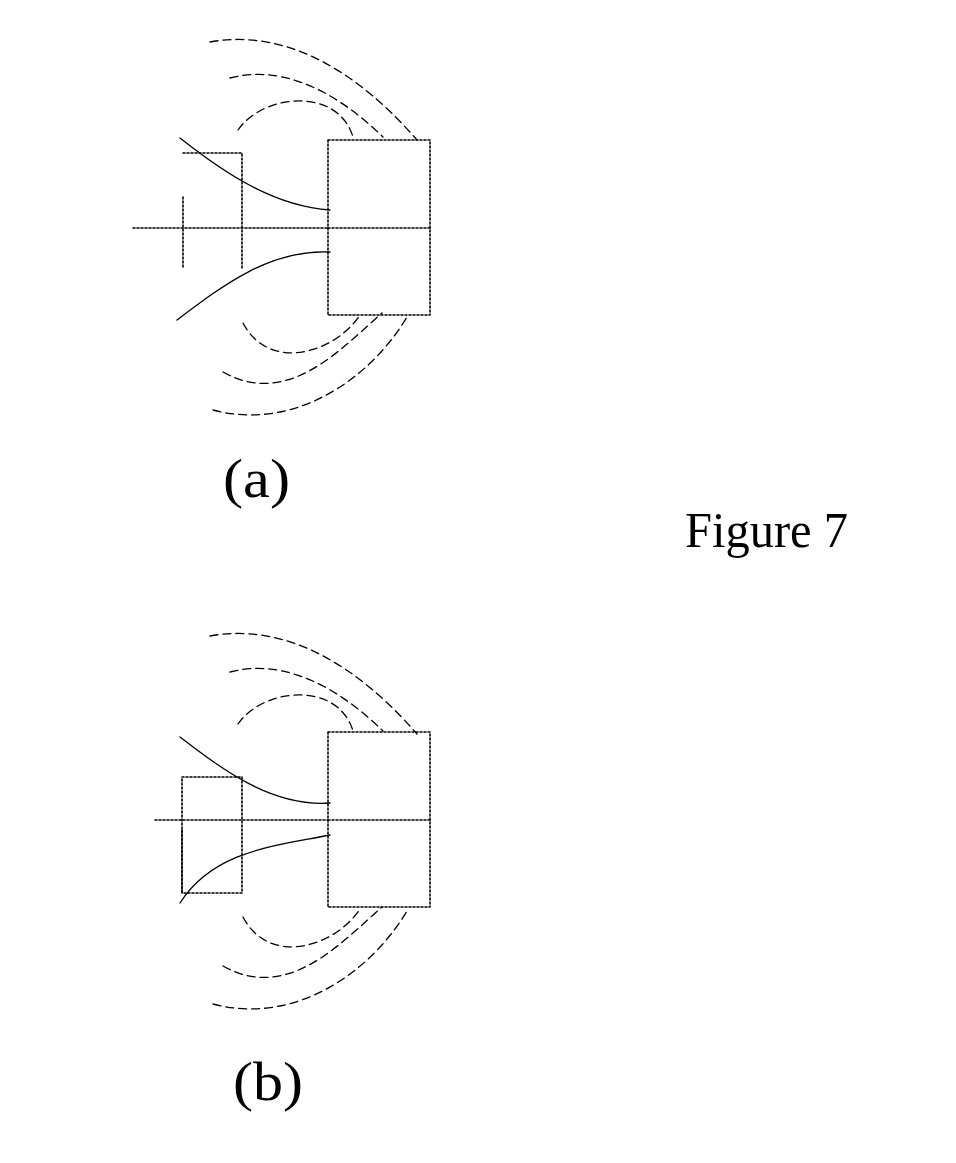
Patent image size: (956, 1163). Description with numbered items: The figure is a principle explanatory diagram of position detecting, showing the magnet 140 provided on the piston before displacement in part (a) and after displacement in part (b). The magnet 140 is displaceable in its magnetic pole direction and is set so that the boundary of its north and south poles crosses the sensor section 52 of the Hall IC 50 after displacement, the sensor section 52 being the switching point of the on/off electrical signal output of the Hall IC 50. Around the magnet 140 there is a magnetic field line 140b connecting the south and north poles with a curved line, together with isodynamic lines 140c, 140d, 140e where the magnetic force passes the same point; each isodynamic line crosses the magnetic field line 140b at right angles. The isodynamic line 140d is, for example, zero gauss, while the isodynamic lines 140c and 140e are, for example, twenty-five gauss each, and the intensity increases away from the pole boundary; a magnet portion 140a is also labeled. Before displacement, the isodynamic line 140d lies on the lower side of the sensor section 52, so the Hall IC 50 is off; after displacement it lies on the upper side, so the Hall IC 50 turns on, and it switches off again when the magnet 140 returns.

The magnet 140 is at (433, 184).
The pole boundary of magnet 140a is at (433, 217).
The magnetic field line 140b is at (340, 120).
The isodynamic line 140c is at (180, 138).
The isodynamic line 140d is at (163, 197).
The isodynamic line 140e is at (267, 263).
The Hall IC 50 is at (183, 257).
The sensor section 52 is at (213, 203).